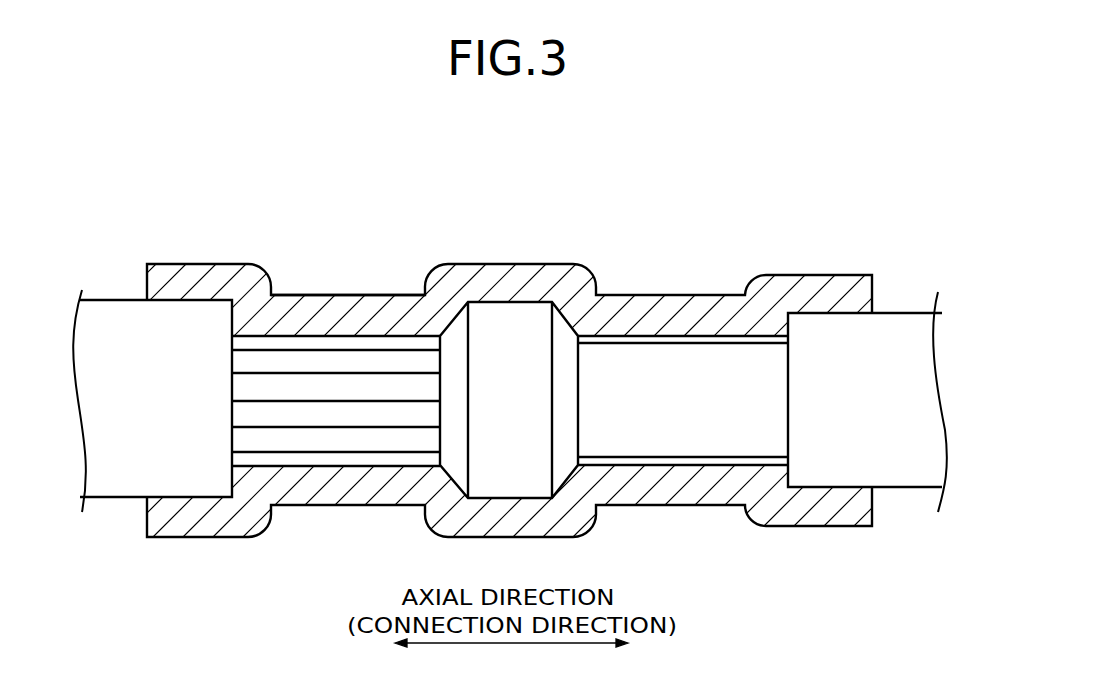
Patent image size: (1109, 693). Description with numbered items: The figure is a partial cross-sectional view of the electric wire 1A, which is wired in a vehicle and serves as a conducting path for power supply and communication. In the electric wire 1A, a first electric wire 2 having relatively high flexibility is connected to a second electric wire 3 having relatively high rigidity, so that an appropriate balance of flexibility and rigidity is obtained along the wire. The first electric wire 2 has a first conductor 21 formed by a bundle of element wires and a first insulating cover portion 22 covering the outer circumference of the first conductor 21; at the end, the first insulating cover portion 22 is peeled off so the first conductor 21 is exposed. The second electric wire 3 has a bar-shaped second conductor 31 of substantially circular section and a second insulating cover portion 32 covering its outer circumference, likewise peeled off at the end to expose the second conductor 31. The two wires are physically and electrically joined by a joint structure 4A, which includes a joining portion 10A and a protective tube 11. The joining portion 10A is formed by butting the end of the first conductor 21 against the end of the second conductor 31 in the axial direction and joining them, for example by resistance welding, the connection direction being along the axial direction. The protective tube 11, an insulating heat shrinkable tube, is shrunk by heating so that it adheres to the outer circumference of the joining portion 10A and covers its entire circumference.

The electric wire 1A is at (380, 171).
The first electric wire 2 is at (337, 219).
The first conductor 21 is at (322, 320).
The first insulating cover portion 22 is at (207, 292).
The protective tube 11 is at (373, 305).
The joining portion 10A is at (456, 293).
The joint structure 4A is at (572, 213).
The second electric wire 3 is at (873, 223).
The second conductor 31 is at (736, 326).
The second insulating cover portion 32 is at (852, 303).